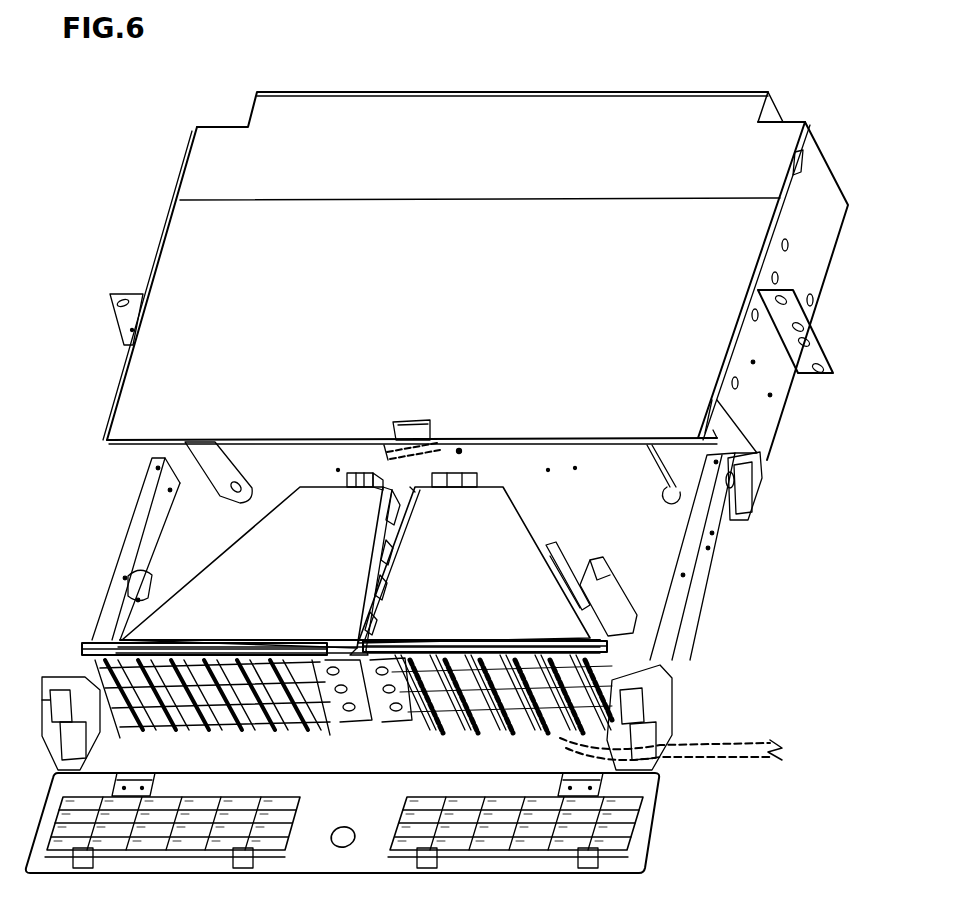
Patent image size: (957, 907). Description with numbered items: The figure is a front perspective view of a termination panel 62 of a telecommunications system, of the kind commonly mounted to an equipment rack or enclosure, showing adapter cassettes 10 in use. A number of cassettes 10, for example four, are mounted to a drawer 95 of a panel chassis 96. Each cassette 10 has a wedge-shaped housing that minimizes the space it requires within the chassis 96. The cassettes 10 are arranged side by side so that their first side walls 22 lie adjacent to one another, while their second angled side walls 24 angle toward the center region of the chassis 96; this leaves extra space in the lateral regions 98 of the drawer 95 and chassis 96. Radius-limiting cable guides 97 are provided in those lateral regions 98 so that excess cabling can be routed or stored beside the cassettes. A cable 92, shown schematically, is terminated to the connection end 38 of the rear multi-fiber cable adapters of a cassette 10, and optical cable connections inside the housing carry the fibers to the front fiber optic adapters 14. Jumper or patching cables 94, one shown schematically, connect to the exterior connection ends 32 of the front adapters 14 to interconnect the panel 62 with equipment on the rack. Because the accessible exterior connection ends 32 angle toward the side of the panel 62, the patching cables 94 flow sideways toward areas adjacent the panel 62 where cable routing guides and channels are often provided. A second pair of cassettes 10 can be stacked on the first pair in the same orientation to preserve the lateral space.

The termination panel 62 is at (116, 184).
The panel chassis 96 is at (146, 406).
The radius-limiting cable guides 97 is at (222, 458).
The adapter cassette 10 is at (300, 508).
The lateral regions 98 is at (208, 526).
The second angled side wall 24 is at (244, 512).
The first side wall 22 is at (398, 503).
The interior connection end 38 is at (352, 470).
The cable 92 is at (392, 440).
The drawer 95 is at (690, 614).
The patching cable 94 is at (722, 737).
The exterior connection end 32 is at (219, 728).
The fiber optic adapter 14 is at (262, 742).